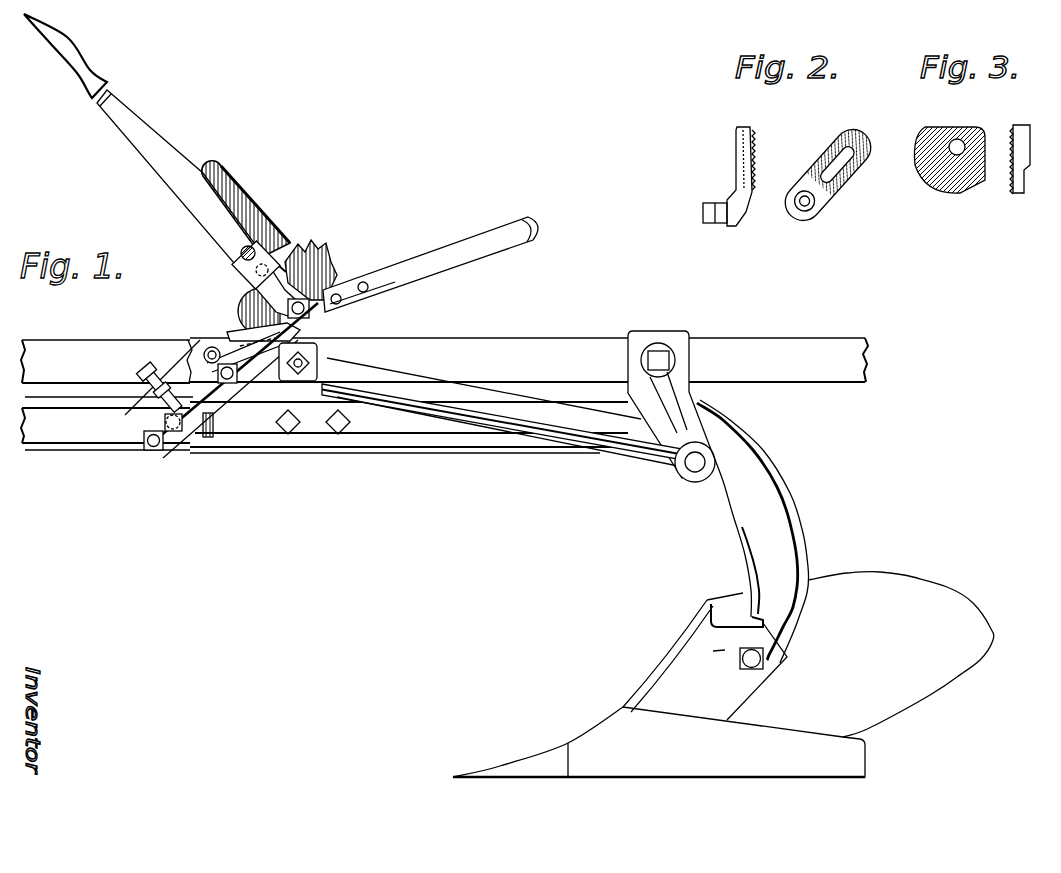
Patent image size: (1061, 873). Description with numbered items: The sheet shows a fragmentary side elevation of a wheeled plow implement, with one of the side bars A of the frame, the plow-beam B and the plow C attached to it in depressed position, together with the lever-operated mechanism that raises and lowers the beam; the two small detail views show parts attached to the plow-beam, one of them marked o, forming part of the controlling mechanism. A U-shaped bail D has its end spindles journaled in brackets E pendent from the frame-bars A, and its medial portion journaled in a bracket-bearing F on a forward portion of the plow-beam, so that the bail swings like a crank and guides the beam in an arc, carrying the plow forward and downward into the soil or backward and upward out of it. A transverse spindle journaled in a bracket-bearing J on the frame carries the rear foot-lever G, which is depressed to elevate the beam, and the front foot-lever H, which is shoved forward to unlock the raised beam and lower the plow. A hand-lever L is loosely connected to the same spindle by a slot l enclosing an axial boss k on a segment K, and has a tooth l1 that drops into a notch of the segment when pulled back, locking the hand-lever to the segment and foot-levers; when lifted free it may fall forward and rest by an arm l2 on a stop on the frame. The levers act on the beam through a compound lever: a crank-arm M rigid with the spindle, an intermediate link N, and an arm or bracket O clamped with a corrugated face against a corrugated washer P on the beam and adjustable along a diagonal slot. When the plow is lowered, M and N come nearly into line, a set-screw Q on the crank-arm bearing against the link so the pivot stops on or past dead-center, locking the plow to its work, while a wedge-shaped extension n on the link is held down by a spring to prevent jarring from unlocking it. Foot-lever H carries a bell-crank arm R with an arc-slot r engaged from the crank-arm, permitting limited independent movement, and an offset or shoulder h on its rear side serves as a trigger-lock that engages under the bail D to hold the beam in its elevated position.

In FIG. 1, the side bars of the frame A is at (444, 347).
In FIG. 1, the plow-beam B is at (324, 439).
In FIG. 1, the plow C is at (723, 588).
In FIG. 1, the bail D is at (518, 433).
In FIG. 1, the brackets E is at (702, 393).
In FIG. 1, the bracket-bearing F is at (334, 355).
In FIG. 1, the rear foot-lever G is at (430, 263).
In FIG. 1, the front foot-lever H is at (243, 203).
In FIG. 1, the offset or shoulder h is at (276, 250).
In FIG. 1, the bracket-bearing J is at (317, 348).
In FIG. 1, the segment K is at (246, 302).
In FIG. 1, the axial boss k is at (313, 256).
In FIG. 1, the hand-lever L is at (165, 158).
In FIG. 1, the slot l is at (268, 300).
In FIG. 1, the tooth l1 is at (230, 258).
In FIG. 1, the arm l2 is at (233, 328).
In FIG. 1, the crank-arm M is at (251, 382).
In FIG. 1, the intermediate link N is at (207, 437).
In FIG. 1, the wedge-shaped extension n is at (281, 342).
In FIG. 1, the arm or bracket O is at (159, 452).
In FIG. 2, the rack and link o is at (812, 152).
In FIG. 1, the corrugated plate or washer P is at (197, 430).
In FIG. 1, the set-screw Q is at (145, 399).
In FIG. 3, the bell-crank arm R is at (1011, 130).
In FIG. 1, the arc-slot r is at (208, 348).